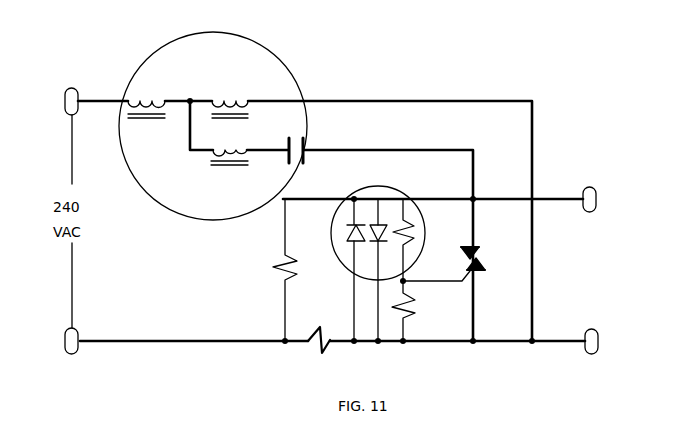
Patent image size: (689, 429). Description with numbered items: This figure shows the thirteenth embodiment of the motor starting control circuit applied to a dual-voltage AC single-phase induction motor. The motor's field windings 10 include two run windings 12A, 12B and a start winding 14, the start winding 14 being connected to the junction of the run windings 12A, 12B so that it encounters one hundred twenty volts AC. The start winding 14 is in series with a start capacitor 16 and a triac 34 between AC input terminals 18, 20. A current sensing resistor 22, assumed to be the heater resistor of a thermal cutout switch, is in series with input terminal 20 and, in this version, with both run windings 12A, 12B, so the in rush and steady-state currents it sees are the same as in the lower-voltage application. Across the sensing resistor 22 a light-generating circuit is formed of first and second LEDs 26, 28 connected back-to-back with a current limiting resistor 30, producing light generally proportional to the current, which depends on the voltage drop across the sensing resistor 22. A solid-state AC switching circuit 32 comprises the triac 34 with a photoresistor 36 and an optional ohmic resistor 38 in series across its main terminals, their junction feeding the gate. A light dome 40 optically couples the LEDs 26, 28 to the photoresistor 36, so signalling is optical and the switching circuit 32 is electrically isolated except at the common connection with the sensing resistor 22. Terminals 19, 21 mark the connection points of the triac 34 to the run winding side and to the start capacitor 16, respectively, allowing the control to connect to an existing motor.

The field windings 10 is at (219, 59).
The run winding 12A is at (163, 85).
The run winding 12B is at (246, 85).
The start winding 14 is at (254, 158).
The start capacitor 16 is at (282, 157).
The AC input terminal 18 is at (57, 101).
The terminal 19 is at (601, 199).
The AC input terminal 20 is at (57, 341).
The terminal 21 is at (603, 341).
The current sensing resistor 22 is at (329, 326).
The first LED 26 is at (343, 214).
The second LED 28 is at (382, 210).
The current limiting resistor 30 is at (273, 270).
The solid-state AC switching circuit 32 is at (445, 264).
The triac 34 is at (483, 255).
The photoresistor 36 is at (408, 225).
The ohmic resistor 38 is at (408, 316).
The light dome 40 is at (345, 272).